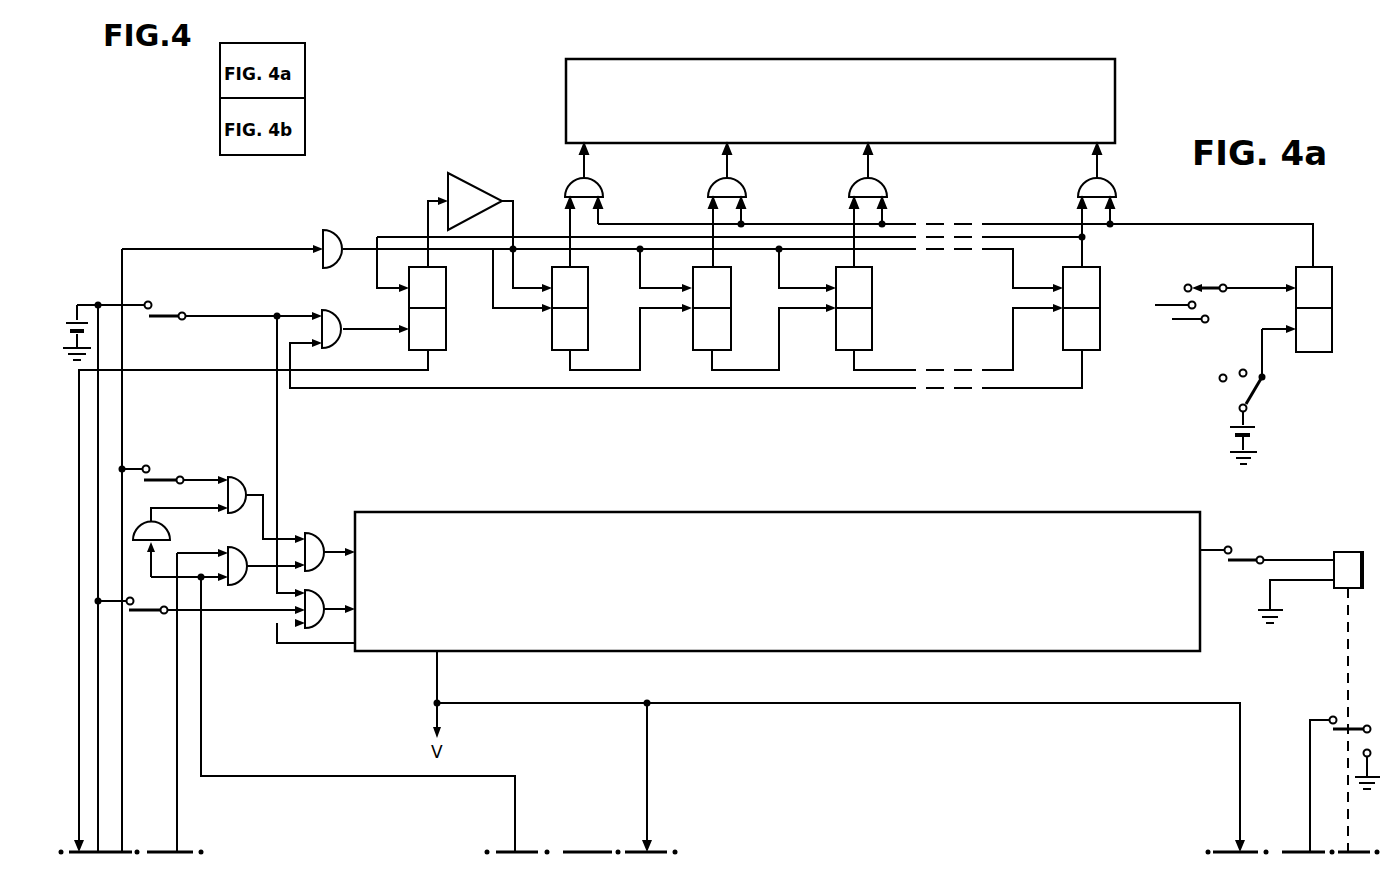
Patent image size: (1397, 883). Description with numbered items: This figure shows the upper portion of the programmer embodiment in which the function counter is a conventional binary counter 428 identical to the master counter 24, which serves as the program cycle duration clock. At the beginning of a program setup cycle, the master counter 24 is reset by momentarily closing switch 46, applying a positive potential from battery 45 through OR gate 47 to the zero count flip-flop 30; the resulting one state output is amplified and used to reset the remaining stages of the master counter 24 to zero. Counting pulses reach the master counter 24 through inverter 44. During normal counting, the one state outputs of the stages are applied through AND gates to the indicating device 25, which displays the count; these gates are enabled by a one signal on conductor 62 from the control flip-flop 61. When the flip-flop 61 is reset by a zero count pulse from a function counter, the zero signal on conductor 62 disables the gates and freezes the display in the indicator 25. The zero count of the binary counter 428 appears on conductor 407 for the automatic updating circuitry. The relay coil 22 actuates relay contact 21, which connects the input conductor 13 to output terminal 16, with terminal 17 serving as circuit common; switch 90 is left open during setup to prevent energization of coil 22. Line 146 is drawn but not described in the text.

The indicating device 25 is at (864, 106).
The master counter 24 is at (823, 195).
The inverter 44 is at (338, 231).
The OR gate 47 is at (335, 314).
The zero count flip-flop 30 is at (446, 332).
The battery 45 is at (71, 320).
The switch 46 is at (165, 318).
The line 146 is at (155, 372).
The conductor 62 is at (1185, 226).
The control flip-flop 61 is at (1332, 330).
The relay coil 22 is at (1342, 550).
The switch 90 is at (1243, 562).
The binary counter 428 is at (748, 596).
The conductor 407 is at (1082, 702).
The output terminal 16 is at (1369, 723).
The conductor 13 is at (1311, 741).
The relay contact 21 is at (1338, 733).
The circuit common terminal 17 is at (1364, 758).